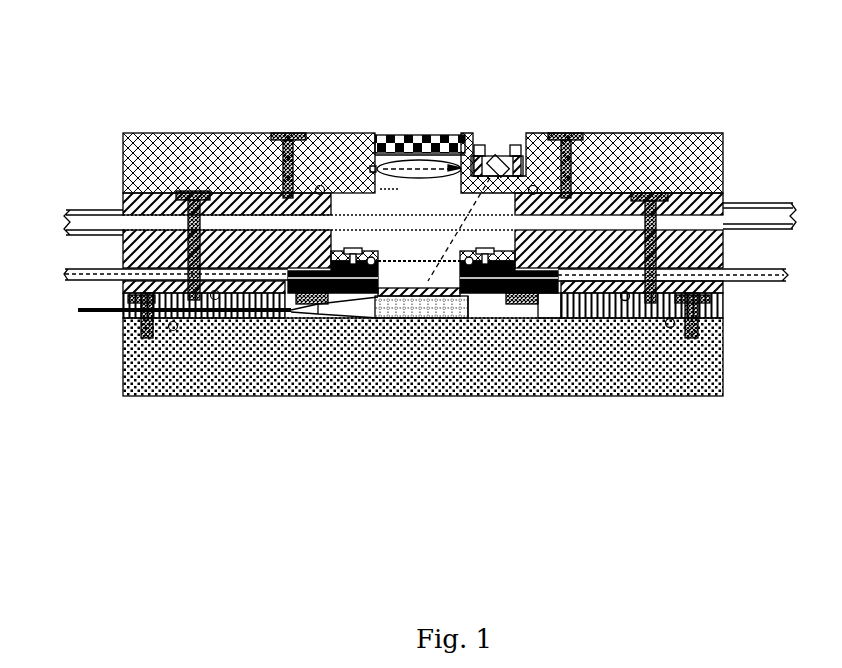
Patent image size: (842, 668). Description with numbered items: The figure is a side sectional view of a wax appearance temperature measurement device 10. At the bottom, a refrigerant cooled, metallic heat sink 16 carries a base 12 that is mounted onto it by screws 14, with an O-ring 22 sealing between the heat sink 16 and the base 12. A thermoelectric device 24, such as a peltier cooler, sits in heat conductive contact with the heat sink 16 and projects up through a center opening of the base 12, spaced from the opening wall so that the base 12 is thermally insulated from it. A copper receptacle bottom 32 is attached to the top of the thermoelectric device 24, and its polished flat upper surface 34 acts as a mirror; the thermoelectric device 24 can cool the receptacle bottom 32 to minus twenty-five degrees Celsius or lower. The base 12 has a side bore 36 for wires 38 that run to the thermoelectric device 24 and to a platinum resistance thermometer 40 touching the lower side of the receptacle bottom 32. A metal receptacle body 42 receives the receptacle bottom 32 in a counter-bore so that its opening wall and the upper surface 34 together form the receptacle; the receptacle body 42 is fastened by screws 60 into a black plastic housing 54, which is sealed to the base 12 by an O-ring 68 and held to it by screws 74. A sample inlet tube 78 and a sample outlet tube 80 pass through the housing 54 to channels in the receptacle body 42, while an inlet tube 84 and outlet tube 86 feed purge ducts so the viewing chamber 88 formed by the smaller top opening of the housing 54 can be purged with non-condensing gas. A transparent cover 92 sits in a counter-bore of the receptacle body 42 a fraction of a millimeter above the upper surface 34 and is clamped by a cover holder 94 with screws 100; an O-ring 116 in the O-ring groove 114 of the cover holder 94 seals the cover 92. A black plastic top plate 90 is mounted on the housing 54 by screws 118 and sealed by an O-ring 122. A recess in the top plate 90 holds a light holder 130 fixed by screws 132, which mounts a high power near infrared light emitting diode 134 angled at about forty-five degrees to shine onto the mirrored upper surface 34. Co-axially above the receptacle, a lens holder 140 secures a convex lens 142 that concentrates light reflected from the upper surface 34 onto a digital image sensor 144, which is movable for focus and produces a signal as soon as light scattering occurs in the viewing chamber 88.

The wax appearance temperature measurement device 10 is at (152, 441).
The base 12 is at (717, 293).
The screws 14 is at (715, 320).
The heat sink 16 is at (715, 377).
The O-ring 22 is at (662, 320).
The thermoelectric device 24 is at (432, 302).
The receptacle bottom 32 is at (455, 302).
The upper surface 34 is at (392, 277).
The side bore 36 is at (115, 303).
The wires 38 is at (83, 301).
The platinum resistance thermometer 40 is at (380, 292).
The receptacle body 42 is at (545, 288).
The housing 54 is at (715, 247).
The screws 60 is at (510, 298).
The O-ring 68 is at (618, 294).
The screws 74 is at (183, 184).
The sample inlet tube 78 is at (95, 263).
The sample outlet tube 80 is at (767, 261).
The inlet tube 84 is at (90, 203).
The outlet tube 86 is at (747, 196).
The viewing chamber 88 is at (313, 125).
The top plate 90 is at (115, 127).
The transparent cover 92 is at (417, 251).
The cover holder 94 is at (495, 242).
The screws 100 is at (348, 242).
The O-ring groove 114 is at (467, 247).
The O-ring 116 is at (363, 247).
The screws 118 is at (563, 125).
The O-ring 122 is at (527, 125).
The light holder 130 is at (478, 137).
The screws 132 is at (468, 148).
The light emitting diode 134 is at (492, 147).
The lens holder 140 is at (372, 181).
The convex lens 142 is at (388, 125).
The digital image sensor 144 is at (400, 152).